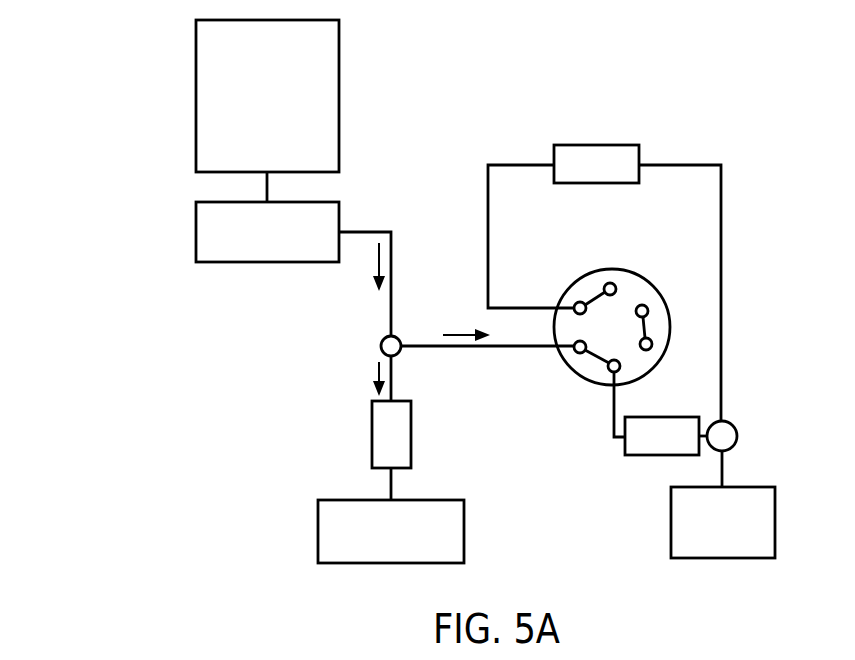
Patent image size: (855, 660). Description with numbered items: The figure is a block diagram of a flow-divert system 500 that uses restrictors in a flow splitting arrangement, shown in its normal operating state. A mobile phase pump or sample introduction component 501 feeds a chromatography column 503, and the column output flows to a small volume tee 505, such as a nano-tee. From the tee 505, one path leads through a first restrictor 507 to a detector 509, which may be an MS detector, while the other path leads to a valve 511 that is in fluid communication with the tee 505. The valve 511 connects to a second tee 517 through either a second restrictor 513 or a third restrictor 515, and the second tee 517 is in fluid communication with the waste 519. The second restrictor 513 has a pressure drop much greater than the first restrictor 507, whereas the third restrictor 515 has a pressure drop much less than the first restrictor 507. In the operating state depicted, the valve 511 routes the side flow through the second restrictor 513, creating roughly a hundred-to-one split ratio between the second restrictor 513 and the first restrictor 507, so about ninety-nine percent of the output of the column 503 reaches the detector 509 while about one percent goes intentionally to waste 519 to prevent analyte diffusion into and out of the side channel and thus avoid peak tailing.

The flow-divert system 500 is at (143, 341).
The mobile phase pump or sample introduction component 501 is at (267, 96).
The chromatography column 503 is at (267, 232).
The small volume tee 505 is at (382, 339).
The first restrictor 507 is at (371, 434).
The detector 509 is at (391, 531).
The valve 511 is at (578, 377).
The second restrictor 513 is at (662, 436).
The third restrictor 515 is at (596, 164).
The second tee 517 is at (738, 428).
The waste 519 is at (723, 522).